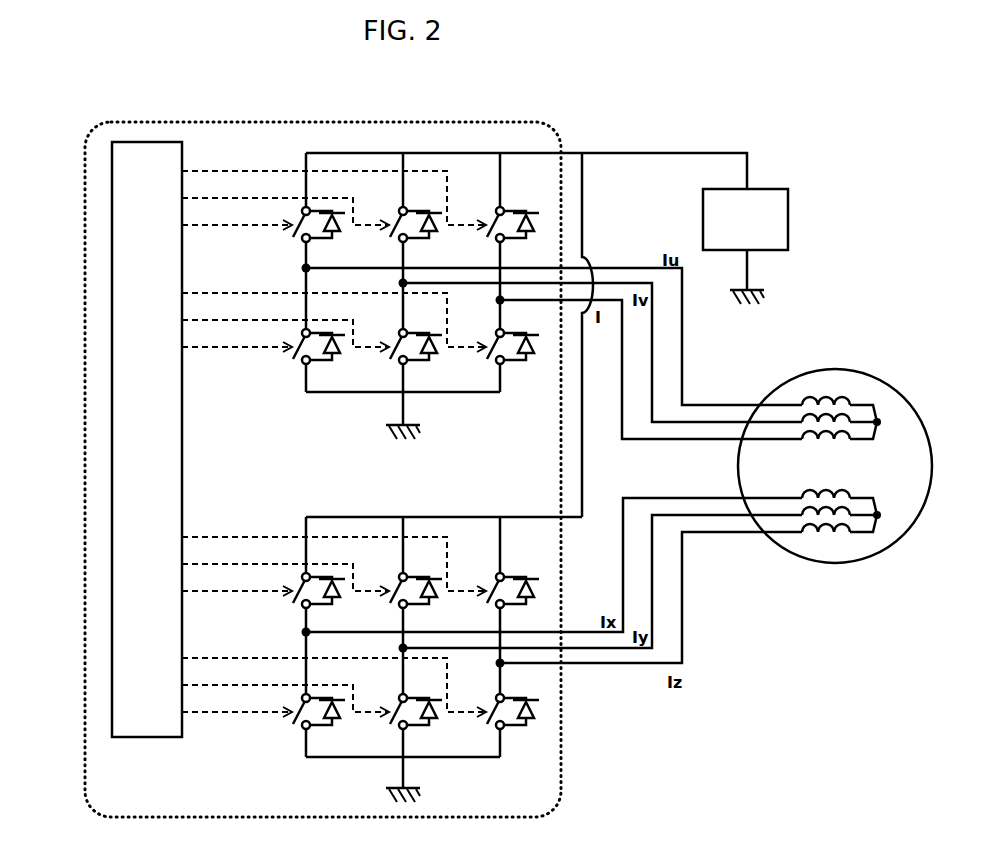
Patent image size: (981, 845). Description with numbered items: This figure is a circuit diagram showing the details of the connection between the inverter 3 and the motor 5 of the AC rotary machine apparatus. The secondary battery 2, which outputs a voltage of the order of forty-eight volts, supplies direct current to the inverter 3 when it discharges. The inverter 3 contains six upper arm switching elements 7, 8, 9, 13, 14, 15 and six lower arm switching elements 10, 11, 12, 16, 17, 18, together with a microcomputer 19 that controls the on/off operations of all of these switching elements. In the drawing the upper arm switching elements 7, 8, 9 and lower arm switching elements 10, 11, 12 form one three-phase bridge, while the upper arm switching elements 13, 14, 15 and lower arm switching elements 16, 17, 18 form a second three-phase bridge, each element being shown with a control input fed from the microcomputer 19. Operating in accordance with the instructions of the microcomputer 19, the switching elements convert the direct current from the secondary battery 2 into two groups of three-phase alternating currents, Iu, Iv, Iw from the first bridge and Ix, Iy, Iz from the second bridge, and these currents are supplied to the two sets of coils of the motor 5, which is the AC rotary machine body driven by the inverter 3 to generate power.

The secondary battery 2 is at (765, 187).
The inverter 3 is at (150, 122).
The motor 5 is at (838, 368).
The upper arm switching element 7 is at (315, 196).
The upper arm switching element 8 is at (412, 196).
The upper arm switching element 9 is at (508, 196).
The lower arm switching element 10 is at (317, 370).
The lower arm switching element 11 is at (415, 370).
The lower arm switching element 12 is at (512, 370).
The upper arm switching element 13 is at (315, 562).
The upper arm switching element 14 is at (412, 562).
The upper arm switching element 15 is at (508, 562).
The lower arm switching element 16 is at (317, 735).
The lower arm switching element 17 is at (415, 735).
The lower arm switching element 18 is at (512, 735).
The microcomputer 19 is at (110, 252).